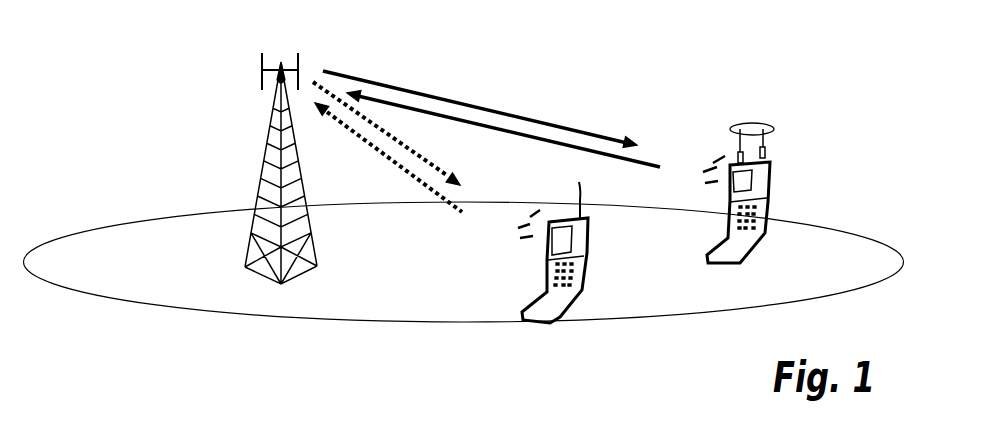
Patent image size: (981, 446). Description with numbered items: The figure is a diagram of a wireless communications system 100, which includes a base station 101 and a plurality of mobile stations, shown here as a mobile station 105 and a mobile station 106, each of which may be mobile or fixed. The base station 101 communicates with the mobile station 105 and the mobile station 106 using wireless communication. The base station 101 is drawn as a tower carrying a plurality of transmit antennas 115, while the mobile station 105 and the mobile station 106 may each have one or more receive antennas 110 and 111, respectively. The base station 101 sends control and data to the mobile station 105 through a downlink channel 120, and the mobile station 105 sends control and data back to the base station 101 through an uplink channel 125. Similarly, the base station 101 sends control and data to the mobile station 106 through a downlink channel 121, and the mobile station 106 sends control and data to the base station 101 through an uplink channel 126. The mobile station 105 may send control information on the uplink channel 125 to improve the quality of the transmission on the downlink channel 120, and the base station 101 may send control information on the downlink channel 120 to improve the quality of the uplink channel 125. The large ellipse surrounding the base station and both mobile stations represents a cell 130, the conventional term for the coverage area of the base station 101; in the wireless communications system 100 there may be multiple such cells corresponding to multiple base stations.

The wireless communications system 100 is at (123, 51).
The base station 101 is at (247, 257).
The transmit antennas 115 is at (262, 70).
The downlink channel 120 is at (482, 95).
The uplink channel 125 is at (498, 138).
The downlink channel 121 is at (433, 168).
The uplink channel 126 is at (382, 167).
The cell 130 is at (425, 316).
The mobile station 105 is at (783, 182).
The receive antennas 110 is at (757, 122).
The mobile station 106 is at (590, 237).
The receive antennas 111 is at (580, 200).